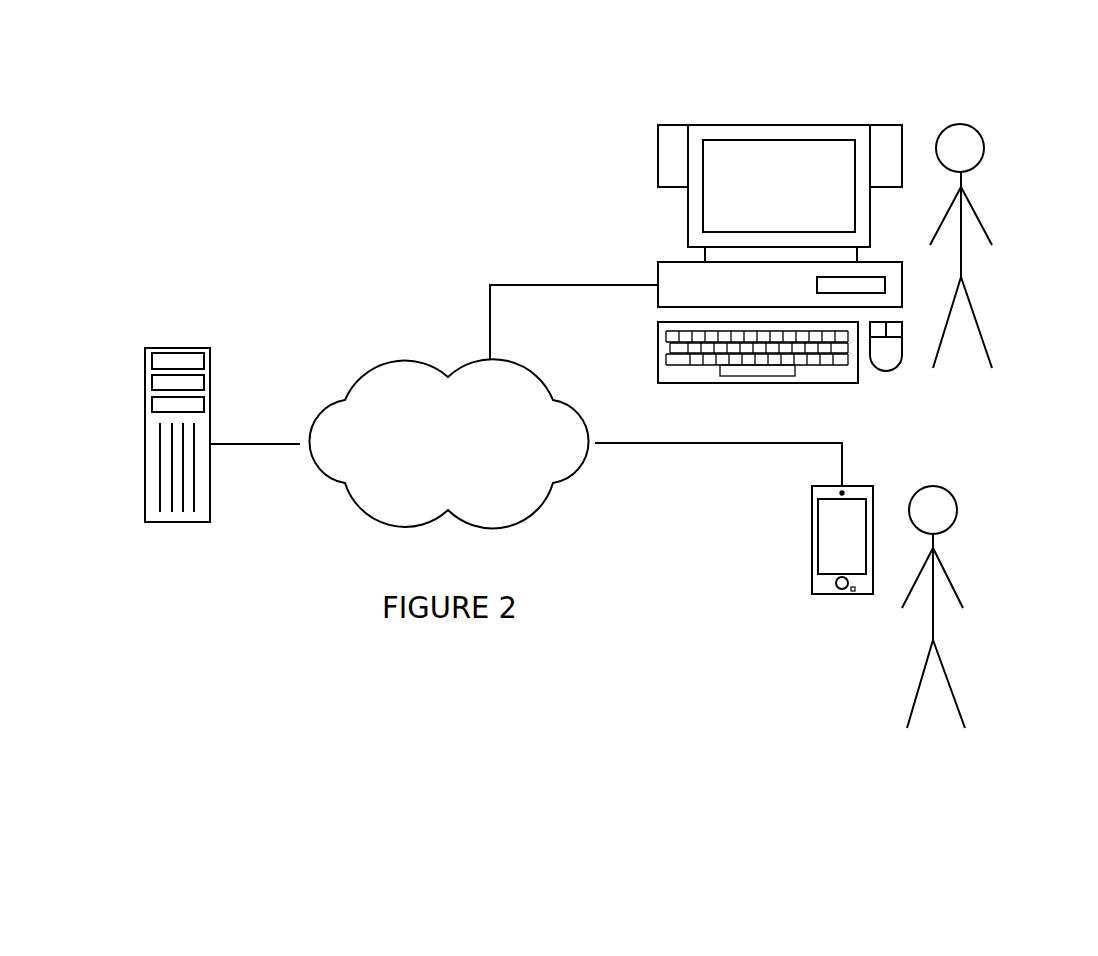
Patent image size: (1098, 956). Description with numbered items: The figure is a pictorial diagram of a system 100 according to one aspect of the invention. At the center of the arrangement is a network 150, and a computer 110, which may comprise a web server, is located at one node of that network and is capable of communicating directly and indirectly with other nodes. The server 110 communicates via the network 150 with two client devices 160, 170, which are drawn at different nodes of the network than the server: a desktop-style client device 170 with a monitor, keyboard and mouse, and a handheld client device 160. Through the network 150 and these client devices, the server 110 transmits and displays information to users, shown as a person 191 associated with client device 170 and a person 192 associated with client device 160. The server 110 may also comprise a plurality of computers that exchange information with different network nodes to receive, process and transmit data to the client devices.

The system 100 is at (233, 110).
The computer 110 is at (145, 360).
The network 150 is at (390, 360).
The client device 160 is at (812, 506).
The client device 170 is at (780, 125).
The person 191 is at (983, 198).
The person 192 is at (953, 547).